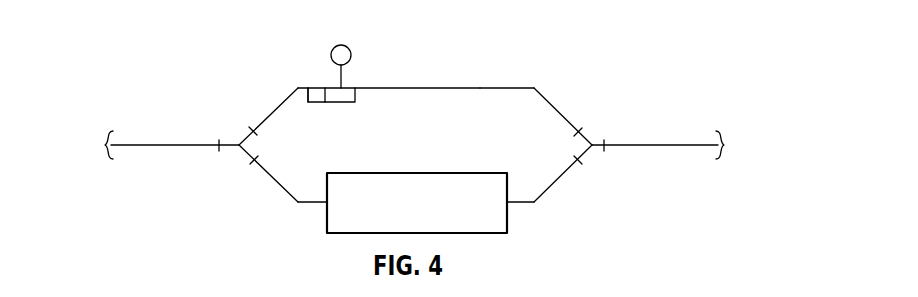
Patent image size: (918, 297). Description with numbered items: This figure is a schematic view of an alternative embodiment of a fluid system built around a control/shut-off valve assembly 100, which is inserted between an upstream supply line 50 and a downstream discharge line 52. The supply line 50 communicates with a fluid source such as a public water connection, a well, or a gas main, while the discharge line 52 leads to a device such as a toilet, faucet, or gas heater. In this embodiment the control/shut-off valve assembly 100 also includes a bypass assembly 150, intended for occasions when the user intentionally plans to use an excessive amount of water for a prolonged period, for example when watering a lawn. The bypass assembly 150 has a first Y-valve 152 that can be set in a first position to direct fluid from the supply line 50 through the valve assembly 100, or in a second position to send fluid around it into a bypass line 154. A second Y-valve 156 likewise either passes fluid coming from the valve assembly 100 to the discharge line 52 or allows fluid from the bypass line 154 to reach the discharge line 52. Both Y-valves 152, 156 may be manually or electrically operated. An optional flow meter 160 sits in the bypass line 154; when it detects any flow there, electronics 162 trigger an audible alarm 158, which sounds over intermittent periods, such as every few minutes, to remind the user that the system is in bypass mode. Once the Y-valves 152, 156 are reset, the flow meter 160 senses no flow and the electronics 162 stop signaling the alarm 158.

The supply line 50 is at (138, 147).
The discharge line 52 is at (670, 147).
The control/shut-off valve assembly 100 is at (437, 173).
The bypass assembly 150 is at (437, 88).
The first Y-valve 152 is at (243, 136).
The bypass line 154 is at (492, 87).
The second Y-valve 156 is at (581, 136).
The audible alarm 158 is at (336, 46).
The flow meter 160 is at (340, 102).
The electronics 162 is at (307, 90).